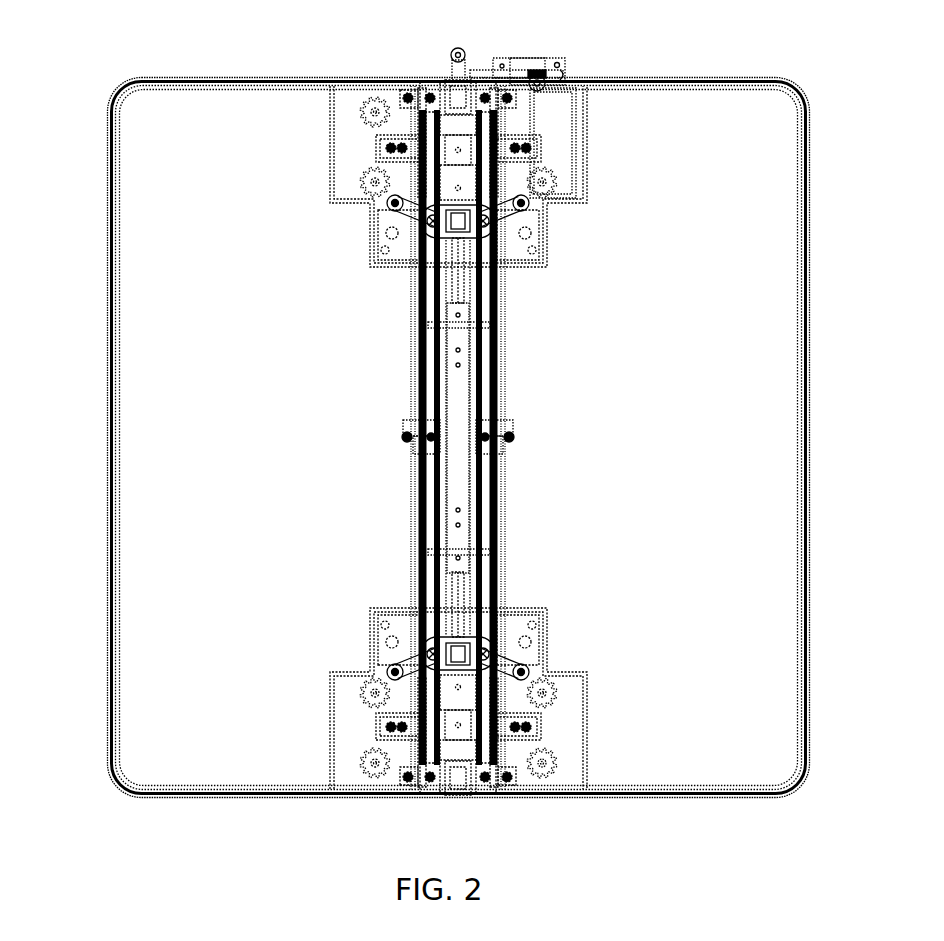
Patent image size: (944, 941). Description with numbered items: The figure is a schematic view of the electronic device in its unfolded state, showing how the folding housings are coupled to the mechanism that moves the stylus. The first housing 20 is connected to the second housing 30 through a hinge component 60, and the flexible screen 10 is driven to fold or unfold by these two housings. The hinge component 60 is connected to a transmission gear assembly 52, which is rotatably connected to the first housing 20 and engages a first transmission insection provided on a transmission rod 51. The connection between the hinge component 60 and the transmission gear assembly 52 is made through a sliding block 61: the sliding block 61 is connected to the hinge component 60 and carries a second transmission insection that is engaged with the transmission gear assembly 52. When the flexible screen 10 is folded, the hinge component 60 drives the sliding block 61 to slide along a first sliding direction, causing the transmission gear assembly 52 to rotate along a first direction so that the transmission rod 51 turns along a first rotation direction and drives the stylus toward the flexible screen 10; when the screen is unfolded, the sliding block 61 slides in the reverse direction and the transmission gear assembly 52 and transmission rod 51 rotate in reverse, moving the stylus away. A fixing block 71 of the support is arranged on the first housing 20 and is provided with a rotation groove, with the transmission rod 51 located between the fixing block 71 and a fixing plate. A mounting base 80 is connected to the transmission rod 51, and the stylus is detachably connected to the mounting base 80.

The flexible screen 10 is at (115, 469).
The first housing 20 is at (806, 164).
The second housing 30 is at (106, 182).
The transmission rod 51 is at (476, 69).
The transmission gear assembly 52 is at (542, 86).
The hinge component 60 is at (490, 258).
The sliding block 61 is at (532, 112).
The fixing block 71 is at (556, 63).
The mounting base 80 is at (453, 62).